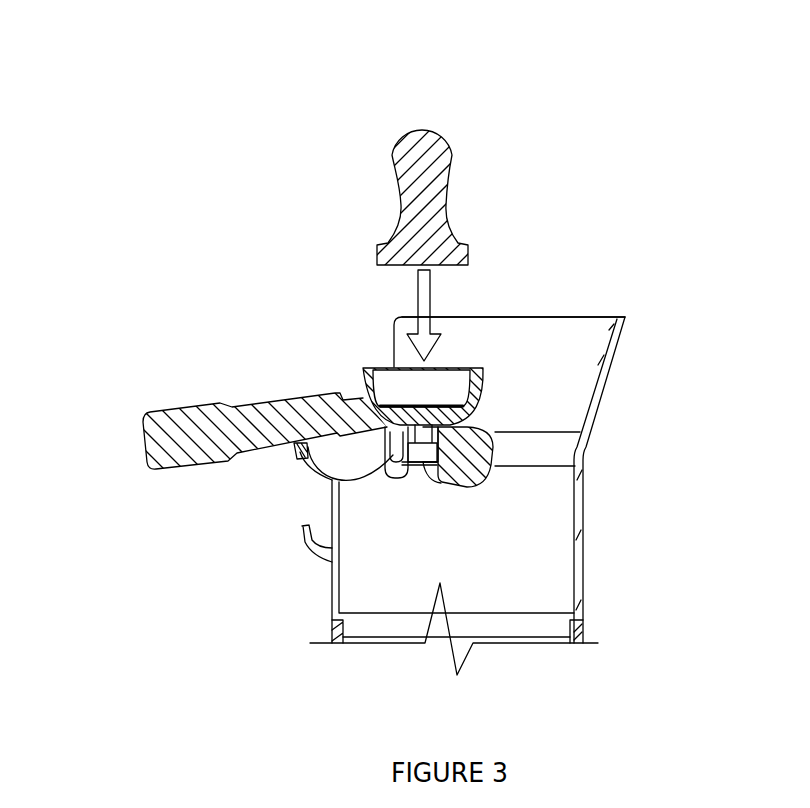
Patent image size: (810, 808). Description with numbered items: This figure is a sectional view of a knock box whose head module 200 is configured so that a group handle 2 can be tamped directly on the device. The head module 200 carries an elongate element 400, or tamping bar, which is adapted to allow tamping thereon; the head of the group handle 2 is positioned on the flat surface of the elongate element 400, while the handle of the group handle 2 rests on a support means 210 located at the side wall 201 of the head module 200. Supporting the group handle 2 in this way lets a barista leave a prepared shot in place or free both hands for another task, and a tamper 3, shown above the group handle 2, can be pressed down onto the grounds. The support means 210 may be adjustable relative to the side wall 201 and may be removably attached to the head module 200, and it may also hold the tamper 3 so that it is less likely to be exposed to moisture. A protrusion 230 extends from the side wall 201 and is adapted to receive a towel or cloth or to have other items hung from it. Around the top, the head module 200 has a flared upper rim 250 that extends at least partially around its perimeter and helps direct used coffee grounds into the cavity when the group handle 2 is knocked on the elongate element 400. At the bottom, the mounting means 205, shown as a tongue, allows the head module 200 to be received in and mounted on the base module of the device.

The group handle 2 is at (187, 413).
The tamper 3 is at (452, 126).
The head module 200 is at (685, 268).
The side wall 201 is at (583, 563).
The mounting means (tongue) 205 is at (572, 643).
The support means 210 is at (297, 449).
The protrusion 230 is at (303, 537).
The flared upper rim 250 is at (623, 321).
The elongate element 400 is at (473, 473).